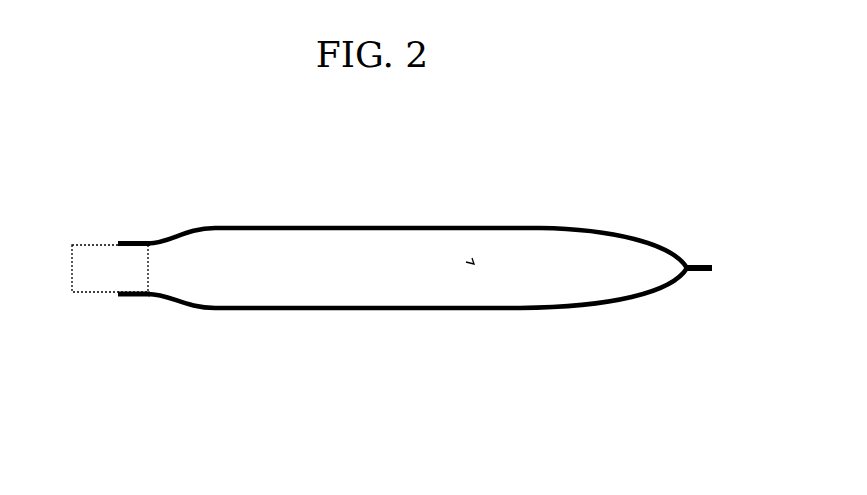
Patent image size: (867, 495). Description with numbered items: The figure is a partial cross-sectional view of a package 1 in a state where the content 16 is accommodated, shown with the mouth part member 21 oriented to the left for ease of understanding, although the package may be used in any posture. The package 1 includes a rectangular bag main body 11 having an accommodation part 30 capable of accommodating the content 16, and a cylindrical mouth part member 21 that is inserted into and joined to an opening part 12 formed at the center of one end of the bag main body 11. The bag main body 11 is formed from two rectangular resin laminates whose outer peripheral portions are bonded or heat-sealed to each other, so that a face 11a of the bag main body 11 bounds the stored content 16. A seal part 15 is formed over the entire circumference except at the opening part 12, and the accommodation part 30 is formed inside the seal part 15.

The package 1 is at (424, 283).
The bag main body 11 is at (592, 318).
The face 11a is at (570, 228).
The opening part 12 is at (131, 242).
The seal part 15 is at (700, 263).
The content 16 is at (330, 258).
The mouth part member 21 is at (105, 283).
The accommodation part 30 is at (470, 262).